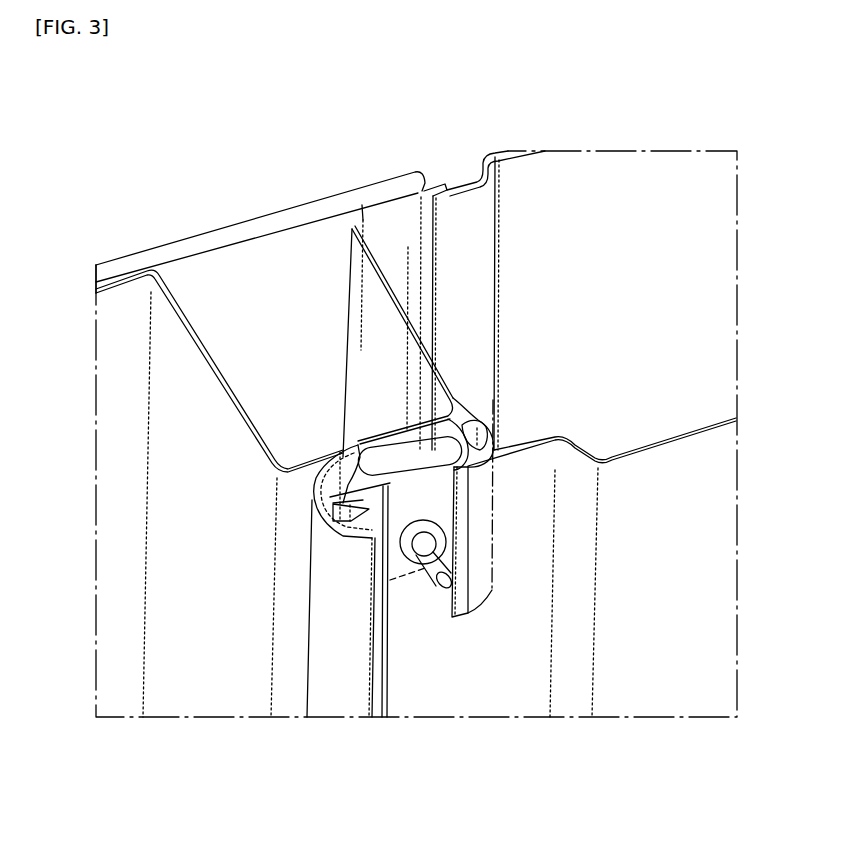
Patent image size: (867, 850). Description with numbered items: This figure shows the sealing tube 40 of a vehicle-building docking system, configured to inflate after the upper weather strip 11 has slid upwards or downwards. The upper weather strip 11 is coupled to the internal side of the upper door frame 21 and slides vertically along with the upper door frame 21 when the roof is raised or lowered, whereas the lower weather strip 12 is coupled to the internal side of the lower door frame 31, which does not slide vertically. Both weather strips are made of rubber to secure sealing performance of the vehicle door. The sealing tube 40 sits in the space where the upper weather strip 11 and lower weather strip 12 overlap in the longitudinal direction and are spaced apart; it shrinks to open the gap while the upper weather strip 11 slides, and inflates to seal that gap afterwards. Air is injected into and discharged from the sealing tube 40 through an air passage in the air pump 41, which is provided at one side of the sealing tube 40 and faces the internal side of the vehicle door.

The upper weather strip 11 is at (472, 417).
The lower weather strip 12 is at (335, 677).
The upper door frame 21 is at (370, 340).
The lower door frame 31 is at (653, 678).
The sealing tube 40 is at (408, 453).
The air pump 41 is at (437, 577).